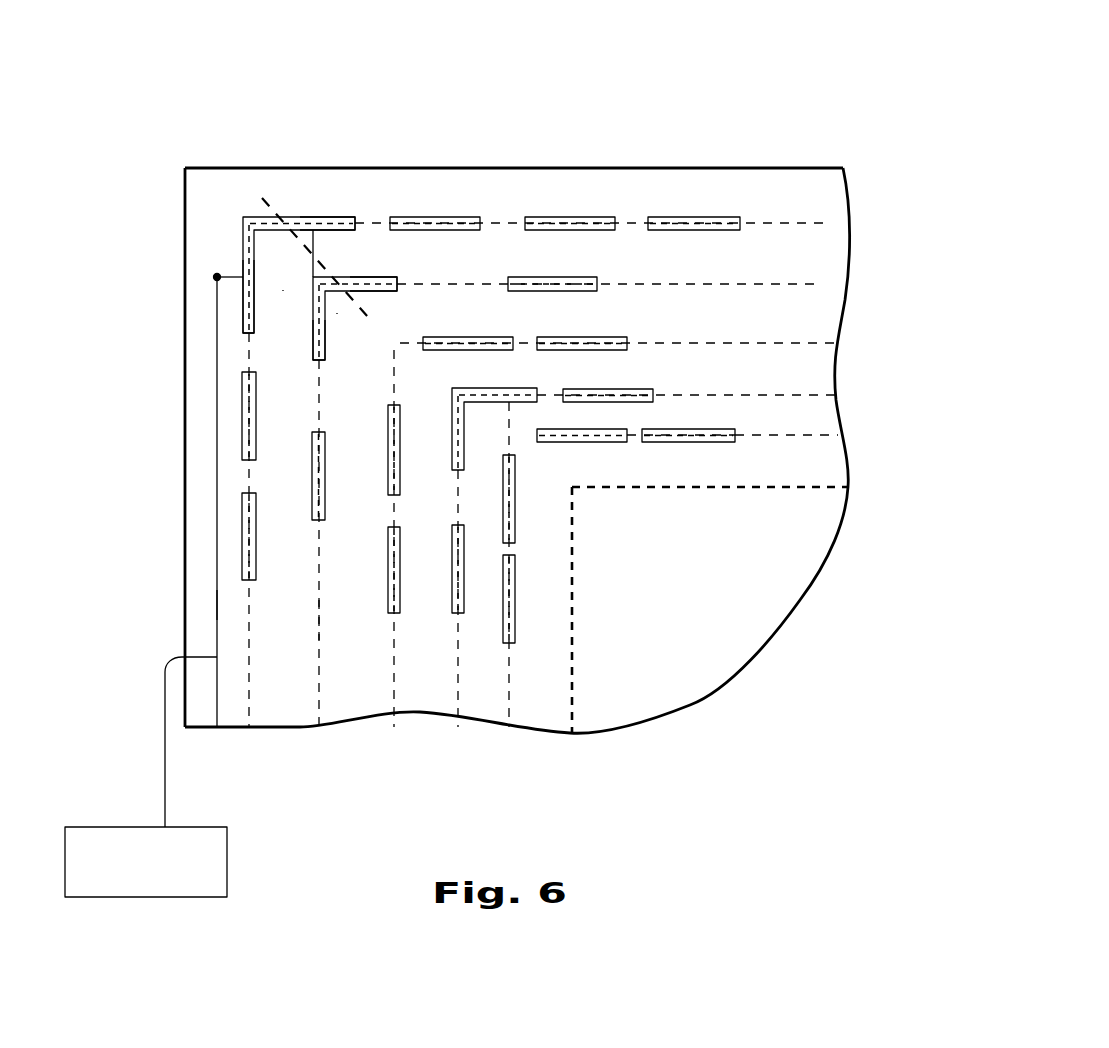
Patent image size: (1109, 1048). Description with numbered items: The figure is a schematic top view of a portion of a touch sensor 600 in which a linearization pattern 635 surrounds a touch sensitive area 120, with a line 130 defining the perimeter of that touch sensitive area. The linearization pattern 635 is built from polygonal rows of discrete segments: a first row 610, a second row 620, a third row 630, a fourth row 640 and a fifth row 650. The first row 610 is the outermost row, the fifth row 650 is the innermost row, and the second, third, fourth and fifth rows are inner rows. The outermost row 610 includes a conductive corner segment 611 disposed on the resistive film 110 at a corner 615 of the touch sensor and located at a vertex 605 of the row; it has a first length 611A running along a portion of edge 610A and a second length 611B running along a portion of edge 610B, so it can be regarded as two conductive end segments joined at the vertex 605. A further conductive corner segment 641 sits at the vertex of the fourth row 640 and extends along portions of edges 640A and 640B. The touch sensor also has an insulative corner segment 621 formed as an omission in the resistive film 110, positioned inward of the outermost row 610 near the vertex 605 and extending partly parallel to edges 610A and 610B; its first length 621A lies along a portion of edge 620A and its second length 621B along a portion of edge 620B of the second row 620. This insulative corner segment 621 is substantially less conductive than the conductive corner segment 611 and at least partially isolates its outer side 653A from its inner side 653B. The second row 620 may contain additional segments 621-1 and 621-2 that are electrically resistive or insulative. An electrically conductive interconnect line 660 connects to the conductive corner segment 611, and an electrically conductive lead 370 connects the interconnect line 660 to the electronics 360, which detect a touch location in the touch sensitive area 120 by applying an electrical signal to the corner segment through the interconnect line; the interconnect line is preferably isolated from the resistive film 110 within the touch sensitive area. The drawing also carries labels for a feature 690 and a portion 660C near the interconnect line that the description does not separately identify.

The touch sensor 600 is at (792, 76).
The resistive film 110 is at (820, 418).
The touch sensitive area 120 is at (757, 640).
The line 130 is at (803, 488).
The electronics 360 is at (229, 868).
The electrically conductive lead 370 is at (165, 738).
The vertex 605 is at (313, 218).
The first row 610 is at (250, 693).
The edge 610A is at (823, 220).
The edge 610B is at (250, 657).
The conductive corner segment 611 is at (258, 200).
The first length 611A is at (343, 217).
The second length 611B is at (255, 310).
The corner 615 is at (403, 317).
The second row 620 is at (318, 668).
The edge 620A is at (827, 283).
The edge 620B is at (319, 612).
The insulative corner segment 621 is at (312, 291).
The first length 621A is at (397, 280).
The second length 621B is at (326, 349).
The segment 621-1 is at (578, 277).
The segment 621-2 is at (325, 493).
The third row 630 is at (397, 680).
The linearization pattern 635 is at (485, 636).
The fourth row 640 is at (458, 690).
The edge 640A is at (780, 390).
The edge 640B is at (460, 667).
The conductive corner segment 641 is at (497, 400).
The fifth row 650 is at (512, 695).
The outer side 653A is at (283, 290).
The inner side 653B is at (337, 313).
The electrically conductive interconnect line 660 is at (232, 272).
The connection trace segment 660C is at (212, 605).
The gap 690 is at (327, 270).